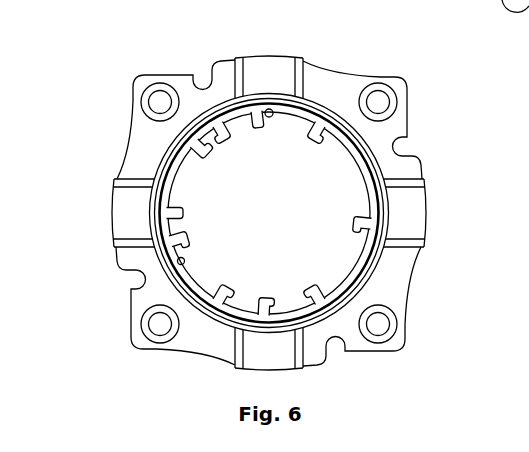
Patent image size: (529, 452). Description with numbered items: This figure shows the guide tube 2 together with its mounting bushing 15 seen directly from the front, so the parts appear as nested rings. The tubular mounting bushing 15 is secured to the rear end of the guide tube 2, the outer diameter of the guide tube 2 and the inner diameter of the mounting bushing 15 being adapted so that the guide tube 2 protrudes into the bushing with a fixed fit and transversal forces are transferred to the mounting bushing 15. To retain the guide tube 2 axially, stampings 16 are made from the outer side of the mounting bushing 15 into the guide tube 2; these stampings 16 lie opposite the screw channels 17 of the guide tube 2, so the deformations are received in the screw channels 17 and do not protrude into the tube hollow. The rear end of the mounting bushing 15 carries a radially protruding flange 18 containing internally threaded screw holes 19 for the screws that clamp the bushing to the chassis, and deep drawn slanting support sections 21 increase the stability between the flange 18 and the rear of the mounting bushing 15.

The guide tube 2 is at (162, 195).
The mounting bushing 15 is at (388, 250).
The stampings 16 is at (266, 109).
The screw channels 17 is at (280, 122).
The flange 18 is at (396, 130).
The screw holes 19 is at (377, 315).
The support sections 21 is at (283, 58).